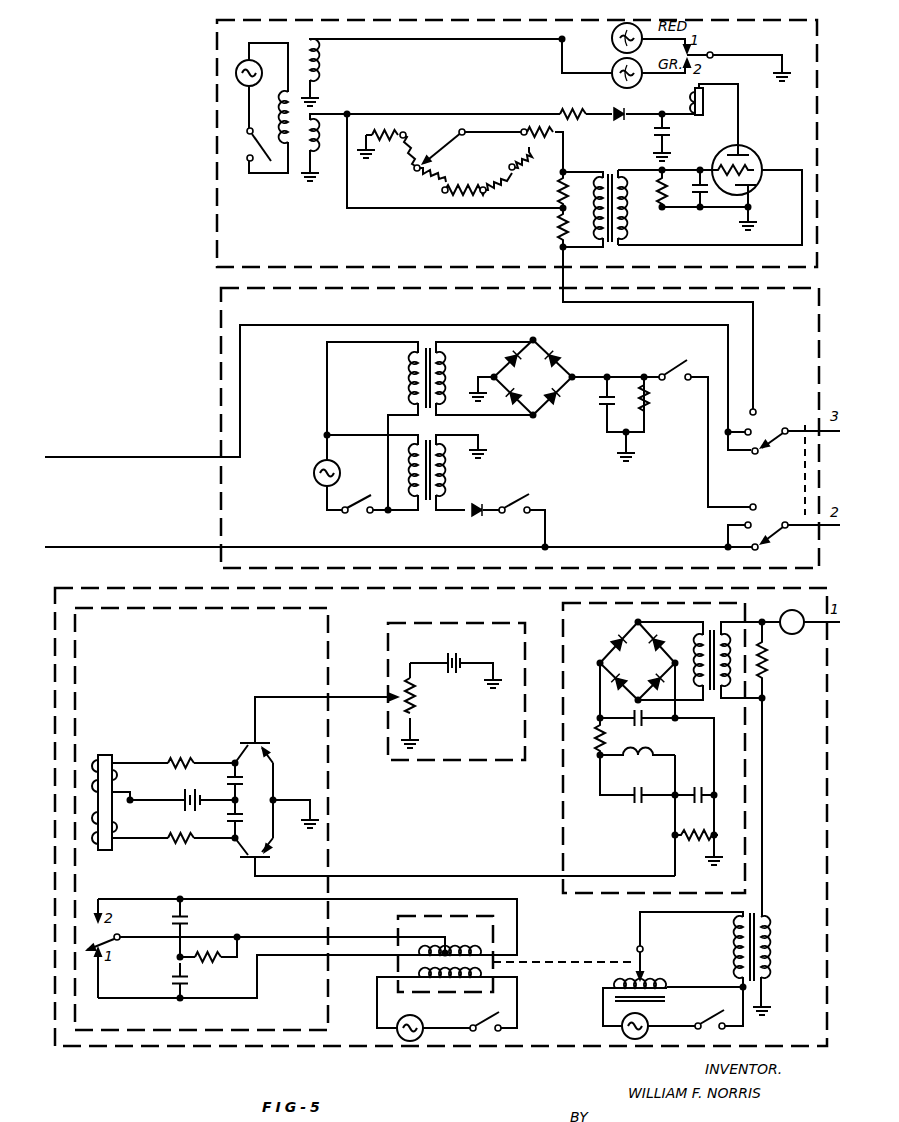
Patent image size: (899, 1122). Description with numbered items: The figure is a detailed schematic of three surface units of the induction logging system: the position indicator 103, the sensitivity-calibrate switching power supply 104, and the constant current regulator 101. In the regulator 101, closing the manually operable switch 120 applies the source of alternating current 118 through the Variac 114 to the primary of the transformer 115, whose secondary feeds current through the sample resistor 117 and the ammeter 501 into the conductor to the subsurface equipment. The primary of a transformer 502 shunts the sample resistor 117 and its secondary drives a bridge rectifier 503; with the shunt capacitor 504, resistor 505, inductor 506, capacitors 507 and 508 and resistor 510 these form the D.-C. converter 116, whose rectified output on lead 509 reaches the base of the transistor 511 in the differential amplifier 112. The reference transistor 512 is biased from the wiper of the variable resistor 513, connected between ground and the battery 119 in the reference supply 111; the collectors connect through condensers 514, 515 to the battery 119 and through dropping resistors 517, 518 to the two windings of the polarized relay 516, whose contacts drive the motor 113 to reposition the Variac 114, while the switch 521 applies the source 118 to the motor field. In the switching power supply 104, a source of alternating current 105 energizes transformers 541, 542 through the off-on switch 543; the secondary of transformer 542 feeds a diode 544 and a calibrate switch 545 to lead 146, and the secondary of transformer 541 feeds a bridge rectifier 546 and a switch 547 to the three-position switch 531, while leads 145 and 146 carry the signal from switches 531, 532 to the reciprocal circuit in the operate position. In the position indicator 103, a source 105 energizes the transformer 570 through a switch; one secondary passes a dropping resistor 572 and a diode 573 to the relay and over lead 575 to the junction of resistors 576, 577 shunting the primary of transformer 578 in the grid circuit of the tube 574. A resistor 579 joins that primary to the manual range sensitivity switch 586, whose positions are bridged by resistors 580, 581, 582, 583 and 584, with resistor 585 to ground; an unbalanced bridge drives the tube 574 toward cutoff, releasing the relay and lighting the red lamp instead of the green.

The constant current regulator 101 is at (187, 586).
The position indicator 103 is at (212, 151).
The sensitivity-calibrate switching power supply 104 is at (215, 323).
The source of alternating current 105 is at (241, 67).
The reference supply 111 is at (388, 650).
The differential amplifier 112 is at (328, 631).
The motor 113 is at (394, 921).
The Variac 114 is at (613, 983).
The transformer 115 is at (754, 914).
The D.-C. converter 116 is at (556, 822).
The sample resistor 117 is at (757, 661).
The source of alternating current 118 is at (402, 1019).
The battery 119 is at (187, 796).
The manually operable switch 120 is at (702, 1016).
The lead 145 is at (123, 457).
The lead 146 is at (103, 550).
The ammeter 501 is at (793, 612).
The transformer 502 is at (713, 624).
The bridge rectifier 503 is at (638, 661).
The shunt capacitor 504 is at (641, 724).
The resistor 505 is at (597, 740).
The inductor 506 is at (637, 763).
The capacitor 507 is at (639, 805).
The capacitor 508 is at (699, 788).
The lead 509 is at (515, 876).
The resistor 510 is at (707, 831).
The transistor 511 is at (253, 870).
The reference transistor 512 is at (262, 741).
The variable resistor 513 is at (423, 704).
The condenser 514 is at (250, 819).
The condenser 515 is at (250, 782).
The polarized relay 516 is at (112, 755).
The dropping resistor 517 is at (191, 851).
The dropping resistor 518 is at (189, 755).
The manually operable switch 521 is at (478, 1036).
The three-position switch 531 is at (782, 523).
The three-position switch 532 is at (771, 425).
The transformer 541 is at (435, 349).
The transformer 542 is at (436, 444).
The off-on switch 543 is at (361, 515).
The diode 544 is at (473, 505).
The calibrate switch 545 is at (515, 513).
The bridge rectifier 546 is at (533, 378).
The manually operated switch 547 is at (681, 368).
The transformer 570 is at (302, 182).
The dropping resistor 572 is at (578, 108).
The diode 573 is at (615, 116).
The tube 574 is at (787, 139).
The lead 575 is at (376, 213).
The resistor 576 is at (563, 233).
The resistor 577 is at (564, 196).
The transformer 578 is at (614, 176).
The resistor 579 is at (529, 140).
The resistor 580 is at (528, 166).
The resistor 581 is at (502, 189).
The resistor 582 is at (462, 190).
The resistor 583 is at (423, 178).
The resistor 584 is at (405, 167).
The resistor 585 is at (388, 156).
The manual range sensitivity switch 586 is at (469, 148).